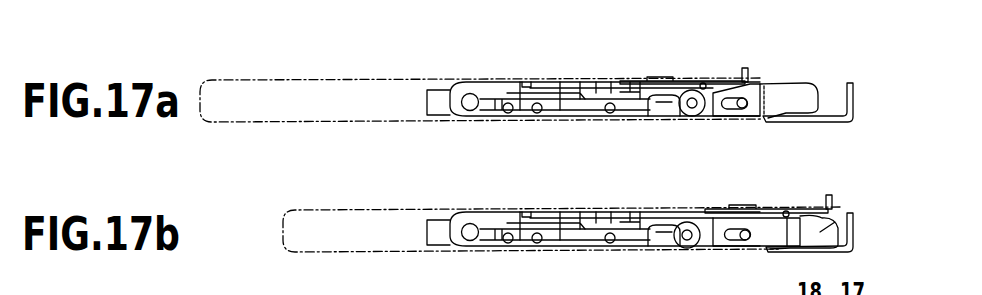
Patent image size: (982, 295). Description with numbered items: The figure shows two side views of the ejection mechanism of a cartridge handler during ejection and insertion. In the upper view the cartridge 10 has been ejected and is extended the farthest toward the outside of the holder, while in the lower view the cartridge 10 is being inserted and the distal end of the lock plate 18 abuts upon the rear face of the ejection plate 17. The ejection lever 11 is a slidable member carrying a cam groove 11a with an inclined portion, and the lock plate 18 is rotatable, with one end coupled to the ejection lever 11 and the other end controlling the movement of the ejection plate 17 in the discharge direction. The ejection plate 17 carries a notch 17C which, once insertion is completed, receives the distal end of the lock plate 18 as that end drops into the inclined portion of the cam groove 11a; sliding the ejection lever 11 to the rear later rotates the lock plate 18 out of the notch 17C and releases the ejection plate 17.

In FIG. 17A, the cartridge 10 is at (245, 87).
In FIG. 17B, the cartridge 10 is at (337, 222).
In FIG. 17A, the ejection lever 11 is at (446, 90).
In FIG. 17B, the ejection lever 11 is at (593, 229).
In FIG. 17A, the cam groove 11a is at (648, 117).
In FIG. 17B, the cam groove 11a is at (645, 246).
In FIG. 17A, the ejection plate 17 is at (745, 68).
In FIG. 17B, the ejection plate 17 is at (828, 196).
In FIG. 17A, the notch 17C is at (695, 80).
In FIG. 17B, the notch 17C is at (778, 207).
In FIG. 17A, the lock plate 18 is at (815, 80).
In FIG. 17B, the lock plate 18 is at (846, 212).